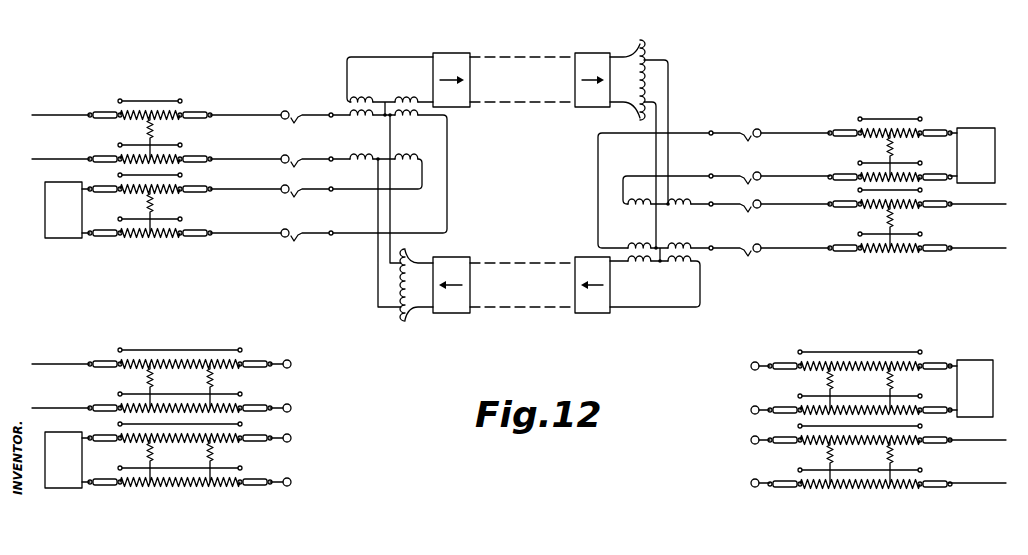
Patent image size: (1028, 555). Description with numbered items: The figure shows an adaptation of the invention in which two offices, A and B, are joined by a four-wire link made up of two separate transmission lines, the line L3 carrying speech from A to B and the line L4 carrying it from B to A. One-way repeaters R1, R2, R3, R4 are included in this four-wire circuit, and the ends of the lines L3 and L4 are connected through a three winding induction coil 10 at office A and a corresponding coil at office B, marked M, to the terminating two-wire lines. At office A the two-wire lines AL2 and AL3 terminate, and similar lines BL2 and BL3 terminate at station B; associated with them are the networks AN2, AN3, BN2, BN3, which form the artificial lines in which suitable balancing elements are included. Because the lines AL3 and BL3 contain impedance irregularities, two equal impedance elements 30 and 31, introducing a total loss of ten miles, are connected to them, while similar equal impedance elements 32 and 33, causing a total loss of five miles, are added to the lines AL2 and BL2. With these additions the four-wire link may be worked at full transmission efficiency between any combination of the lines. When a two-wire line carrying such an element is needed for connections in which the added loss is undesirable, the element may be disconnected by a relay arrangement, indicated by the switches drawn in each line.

The impedance element 32 is at (163, 127).
The three winding induction coil 10 is at (386, 107).
The one-way repeater R1 is at (450, 64).
The one-way repeater R2 is at (591, 64).
The one-way repeater R3 is at (596, 302).
The one-way repeater R4 is at (455, 302).
The transmission line L3 is at (514, 59).
The transmission line L4 is at (512, 264).
The transformer midpoint connection M is at (661, 257).
The impedance element 33 is at (875, 222).
The impedance element 30 is at (186, 385).
The impedance element 31 is at (843, 455).
The two-wire line AL2 is at (50, 116).
The network A2 AN2 is at (189, 211).
The network B2 BN2 is at (853, 156).
The two-wire line BL2 is at (997, 207).
The two-wire line AL3 is at (50, 365).
The network A3 AN3 is at (168, 460).
The network B3 BN3 is at (874, 388).
The two-wire line BL3 is at (997, 440).